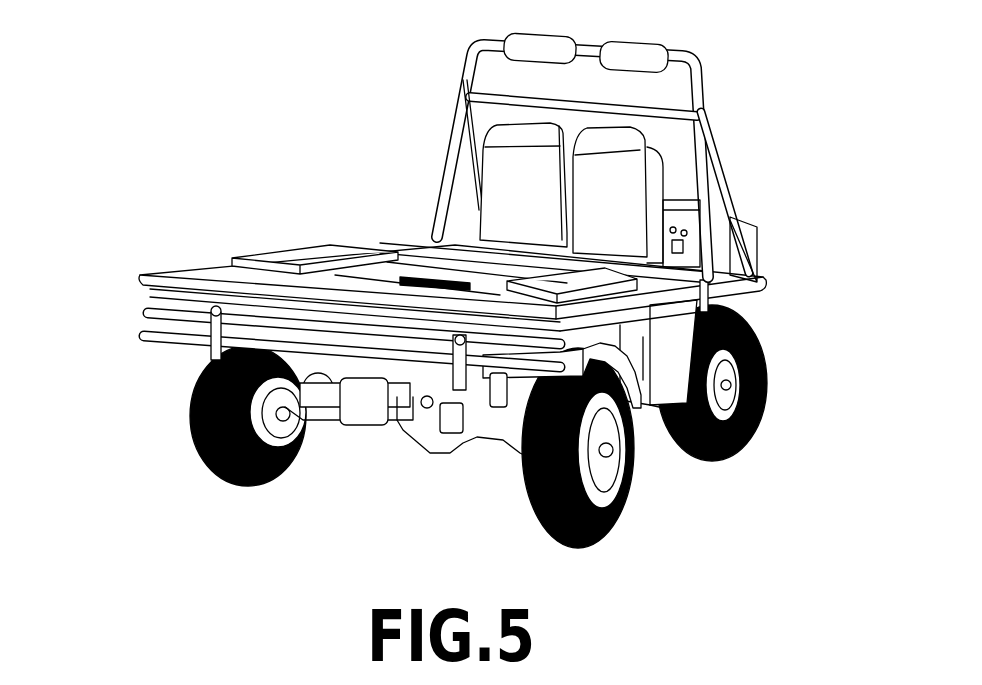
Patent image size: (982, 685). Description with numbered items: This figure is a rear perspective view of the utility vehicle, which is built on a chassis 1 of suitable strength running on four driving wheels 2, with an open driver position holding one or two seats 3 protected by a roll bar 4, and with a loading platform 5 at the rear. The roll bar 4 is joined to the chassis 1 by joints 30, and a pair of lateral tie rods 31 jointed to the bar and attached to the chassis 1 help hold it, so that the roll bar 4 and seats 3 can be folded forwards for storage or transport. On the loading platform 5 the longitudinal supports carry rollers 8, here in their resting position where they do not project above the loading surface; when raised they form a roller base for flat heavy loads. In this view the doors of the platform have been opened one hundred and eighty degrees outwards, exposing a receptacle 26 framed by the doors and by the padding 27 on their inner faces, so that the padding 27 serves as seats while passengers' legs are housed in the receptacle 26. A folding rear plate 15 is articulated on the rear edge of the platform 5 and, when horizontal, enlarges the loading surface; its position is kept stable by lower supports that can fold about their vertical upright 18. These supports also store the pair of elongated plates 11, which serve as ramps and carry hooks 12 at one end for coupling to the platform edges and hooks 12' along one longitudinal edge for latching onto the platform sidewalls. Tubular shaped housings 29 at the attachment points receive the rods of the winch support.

The chassis 1 is at (718, 450).
The driving wheels 2 is at (600, 532).
The seats 3 is at (518, 177).
The roll bar 4 is at (687, 63).
The loading platform 5 is at (450, 262).
The rollers 8 is at (400, 262).
The elongated plates 11 is at (350, 333).
The hooks 12 is at (311, 323).
The hooks 12' is at (321, 402).
The rear plate 15 is at (192, 273).
The vertical upright 18 is at (207, 340).
The receptacle 26 is at (360, 280).
The padding 27 is at (273, 257).
The tubular shaped housings 29 is at (733, 298).
The joints 30 is at (755, 227).
The lateral tie rods 31 is at (722, 180).